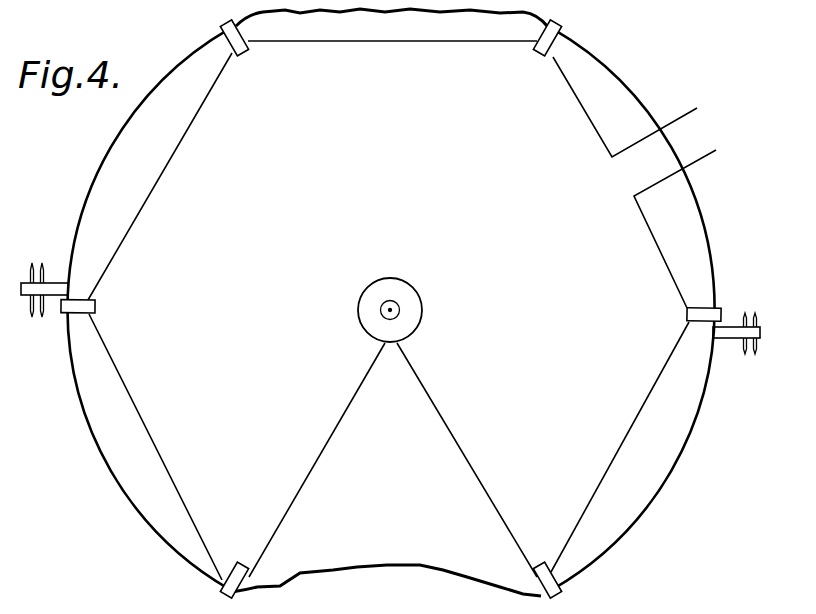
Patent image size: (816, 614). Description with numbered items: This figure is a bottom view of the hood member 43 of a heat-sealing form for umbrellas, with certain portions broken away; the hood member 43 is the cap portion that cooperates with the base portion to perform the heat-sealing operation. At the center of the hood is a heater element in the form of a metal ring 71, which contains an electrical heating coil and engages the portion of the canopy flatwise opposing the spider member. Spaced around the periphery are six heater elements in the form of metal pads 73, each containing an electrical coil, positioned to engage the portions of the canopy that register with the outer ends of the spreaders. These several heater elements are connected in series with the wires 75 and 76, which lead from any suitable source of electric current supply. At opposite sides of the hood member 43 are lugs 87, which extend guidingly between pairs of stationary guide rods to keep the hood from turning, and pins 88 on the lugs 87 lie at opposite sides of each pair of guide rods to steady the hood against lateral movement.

The hood member 43 is at (298, 340).
The metal ring 71 is at (392, 288).
The metal pads 73 is at (241, 50).
The wire 75 is at (679, 117).
The wire 76 is at (705, 157).
The lugs 87 is at (760, 334).
The pins 88 is at (748, 317).